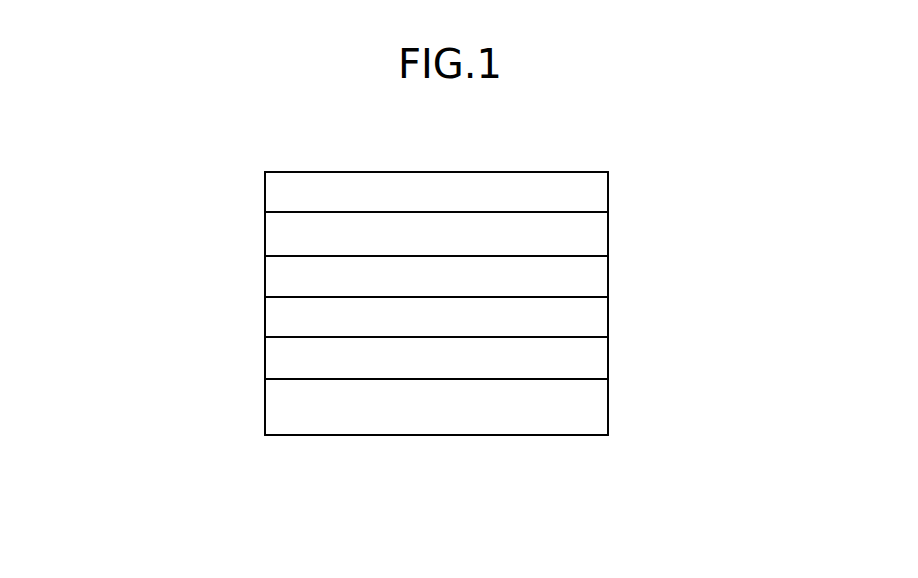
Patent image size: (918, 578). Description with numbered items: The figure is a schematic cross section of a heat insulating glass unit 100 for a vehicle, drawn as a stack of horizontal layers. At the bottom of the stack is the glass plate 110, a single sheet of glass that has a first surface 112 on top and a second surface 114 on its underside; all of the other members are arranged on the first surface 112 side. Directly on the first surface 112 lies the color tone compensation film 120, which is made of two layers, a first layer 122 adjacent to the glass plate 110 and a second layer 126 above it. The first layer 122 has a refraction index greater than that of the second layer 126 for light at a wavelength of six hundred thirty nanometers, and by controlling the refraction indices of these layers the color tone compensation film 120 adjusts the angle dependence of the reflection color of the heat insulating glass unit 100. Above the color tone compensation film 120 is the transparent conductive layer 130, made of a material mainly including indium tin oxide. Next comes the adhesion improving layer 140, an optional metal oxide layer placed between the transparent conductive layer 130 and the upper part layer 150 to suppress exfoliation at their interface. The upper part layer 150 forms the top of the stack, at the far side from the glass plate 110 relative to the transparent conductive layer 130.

The heat insulating glass unit 100 is at (216, 162).
The glass plate 110 is at (600, 405).
The first surface 112 is at (320, 378).
The second surface 114 is at (317, 437).
The color tone compensation film 120 is at (682, 304).
The first layer 122 is at (600, 358).
The second layer 126 is at (600, 316).
The transparent conductive layer 130 is at (600, 275).
The adhesion improving layer 140 is at (600, 233).
The upper part layer 150 is at (600, 191).